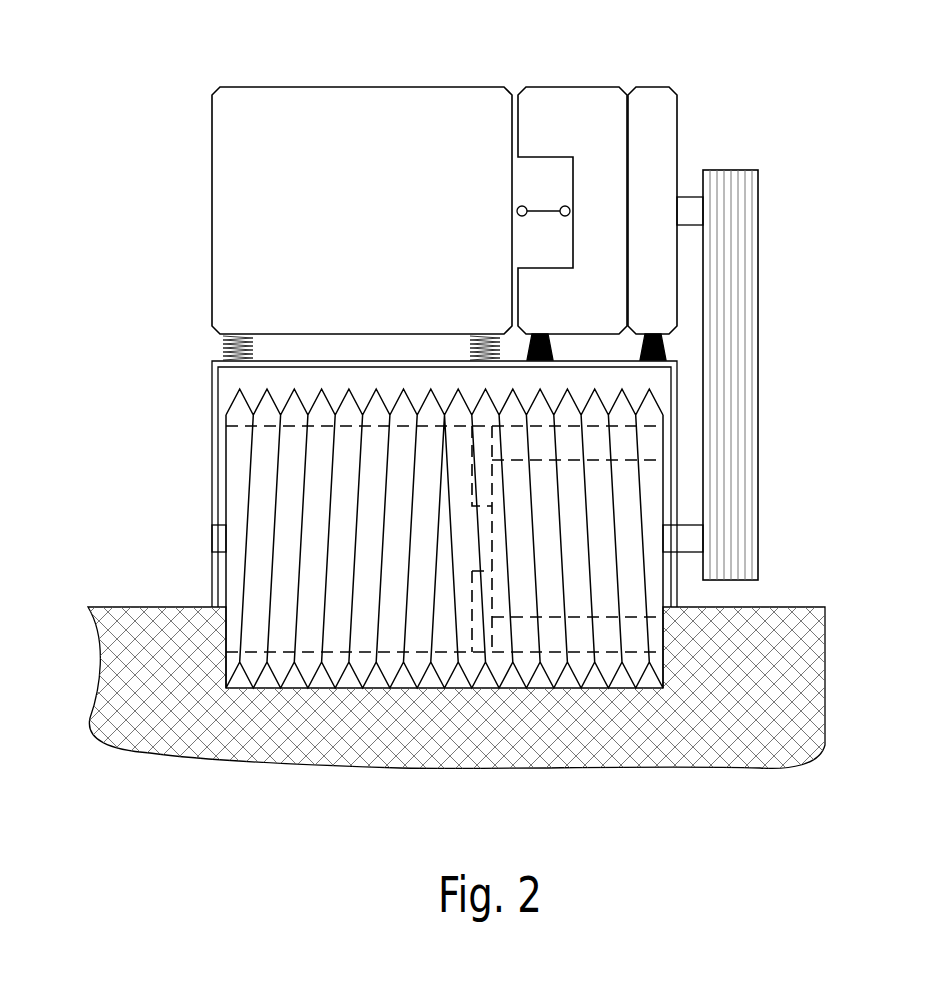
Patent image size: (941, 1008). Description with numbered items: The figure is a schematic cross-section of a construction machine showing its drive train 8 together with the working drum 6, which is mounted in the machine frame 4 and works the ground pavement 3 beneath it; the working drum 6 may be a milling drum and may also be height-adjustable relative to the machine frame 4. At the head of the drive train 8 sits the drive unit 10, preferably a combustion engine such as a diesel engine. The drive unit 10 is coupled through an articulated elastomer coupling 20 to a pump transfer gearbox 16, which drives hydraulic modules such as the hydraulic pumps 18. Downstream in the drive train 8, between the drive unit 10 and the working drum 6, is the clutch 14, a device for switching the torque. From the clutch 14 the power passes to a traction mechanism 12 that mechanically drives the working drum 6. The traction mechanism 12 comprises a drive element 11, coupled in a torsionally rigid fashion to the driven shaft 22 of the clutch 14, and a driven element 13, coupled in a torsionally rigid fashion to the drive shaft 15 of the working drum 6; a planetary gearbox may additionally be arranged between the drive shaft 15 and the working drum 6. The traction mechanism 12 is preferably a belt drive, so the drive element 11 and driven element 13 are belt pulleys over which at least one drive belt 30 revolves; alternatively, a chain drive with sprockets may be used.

The ground pavement 3 is at (802, 607).
The machine frame 4 is at (215, 403).
The working drum 6 is at (239, 448).
The drive train 8 is at (732, 99).
The drive unit 10 is at (368, 226).
The drive element 11 is at (806, 198).
The traction mechanism 12 is at (804, 387).
The driven element 13 is at (811, 516).
The clutch 14 is at (635, 213).
The drive shaft 15 is at (687, 537).
The pump transfer gearbox 16 is at (583, 213).
The hydraulic pumps 18 is at (542, 117).
The elastomer coupling 20 is at (543, 212).
The driven shaft 22 is at (689, 210).
The drive belt 30 is at (740, 305).